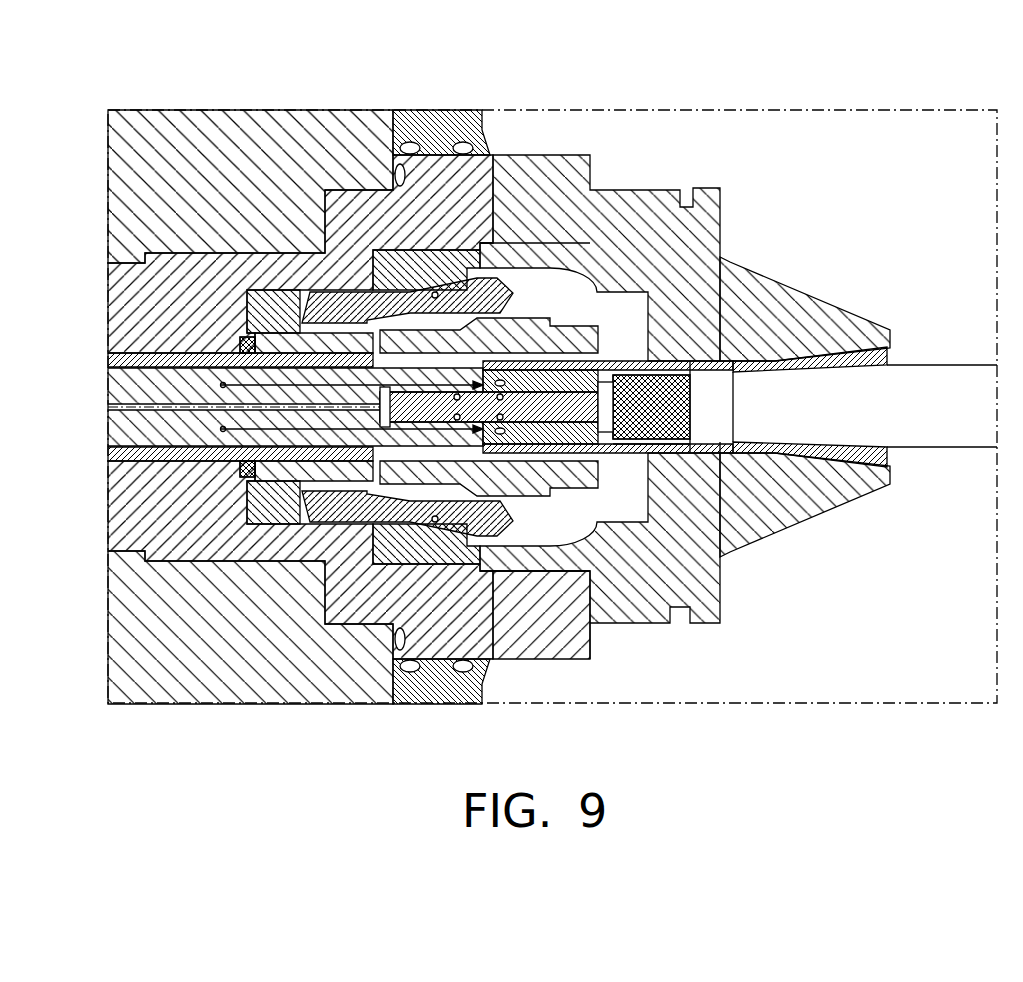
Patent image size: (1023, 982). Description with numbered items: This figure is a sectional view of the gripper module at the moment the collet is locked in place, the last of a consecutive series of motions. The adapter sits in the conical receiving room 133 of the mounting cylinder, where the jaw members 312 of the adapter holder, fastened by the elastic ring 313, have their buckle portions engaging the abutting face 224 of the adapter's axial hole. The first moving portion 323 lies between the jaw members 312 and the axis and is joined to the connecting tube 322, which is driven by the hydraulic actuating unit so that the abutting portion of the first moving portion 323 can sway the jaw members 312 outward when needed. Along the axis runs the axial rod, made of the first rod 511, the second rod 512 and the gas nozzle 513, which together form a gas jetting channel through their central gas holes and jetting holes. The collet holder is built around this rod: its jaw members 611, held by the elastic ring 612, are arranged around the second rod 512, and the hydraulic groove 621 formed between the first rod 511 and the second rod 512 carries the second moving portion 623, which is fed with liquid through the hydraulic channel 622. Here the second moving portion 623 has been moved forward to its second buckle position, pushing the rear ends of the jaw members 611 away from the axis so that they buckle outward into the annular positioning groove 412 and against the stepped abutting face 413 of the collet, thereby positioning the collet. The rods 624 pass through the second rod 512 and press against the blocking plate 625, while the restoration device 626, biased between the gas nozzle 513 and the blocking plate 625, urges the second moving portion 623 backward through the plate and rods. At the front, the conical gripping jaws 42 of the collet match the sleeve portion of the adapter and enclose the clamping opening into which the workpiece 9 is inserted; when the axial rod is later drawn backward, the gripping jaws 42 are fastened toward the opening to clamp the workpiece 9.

The connecting tube 322 is at (137, 357).
The elastic ring 313 is at (410, 250).
The jaw members 312 is at (463, 243).
The abutting face 224 is at (438, 292).
The receiving room 133 is at (568, 330).
The first moving portion 323 is at (612, 372).
The rods 624 is at (637, 365).
The blocking plate 625 is at (655, 385).
The restoration device 626 is at (705, 375).
The gripping jaws 42 is at (857, 355).
The workpiece 9 is at (912, 402).
The first rod 511 is at (167, 430).
The hydraulic channel 622 is at (300, 429).
The hydraulic groove 621 is at (395, 462).
The second moving portion 623 is at (490, 440).
The stepped abutting face 413 is at (527, 435).
The jaw members 611 is at (560, 452).
The annular positioning groove 412 is at (605, 432).
The elastic ring 612 is at (635, 445).
The second rod 512 is at (700, 455).
The gas nozzle 513 is at (717, 462).